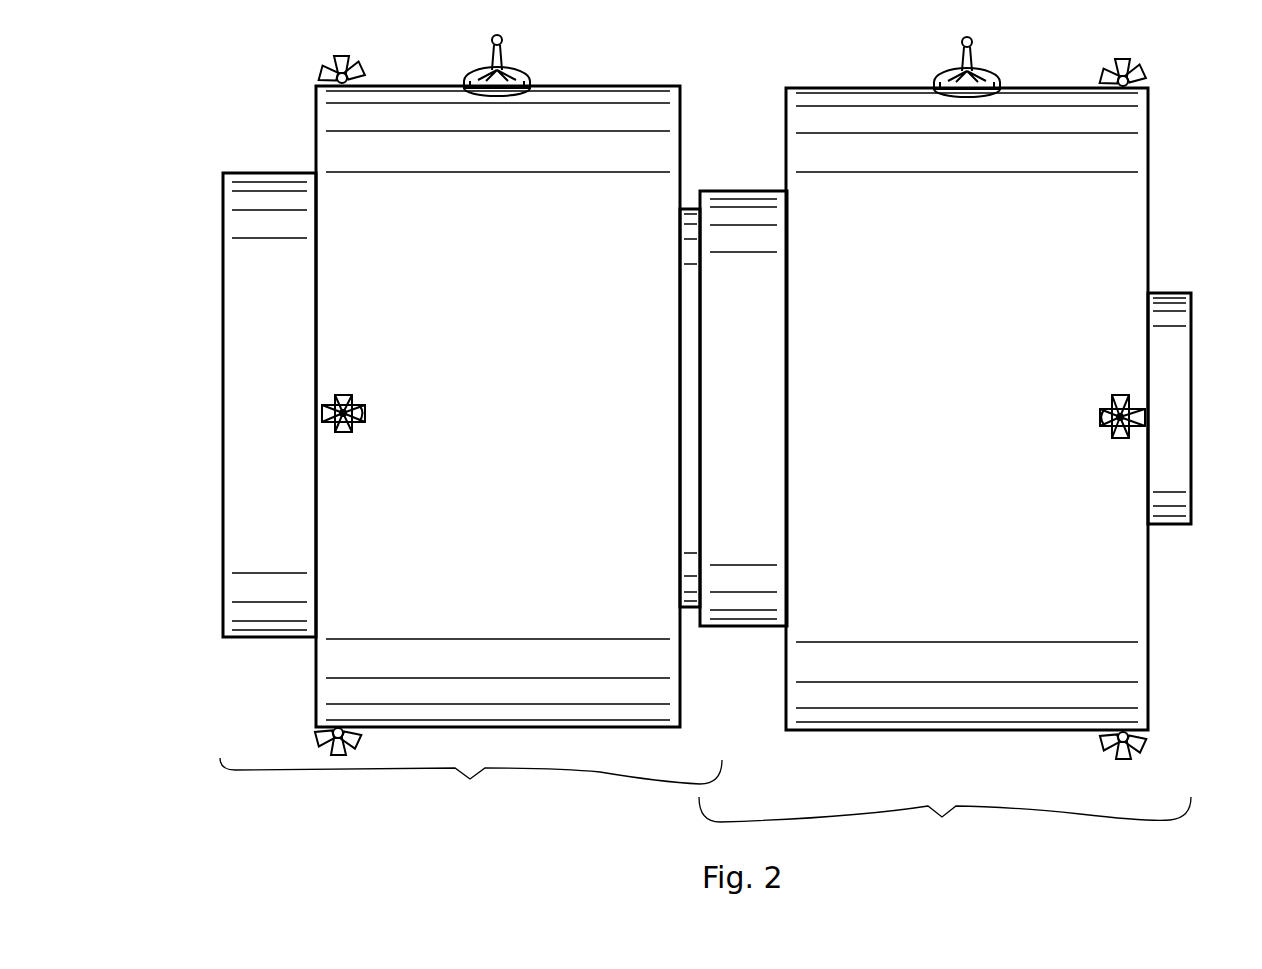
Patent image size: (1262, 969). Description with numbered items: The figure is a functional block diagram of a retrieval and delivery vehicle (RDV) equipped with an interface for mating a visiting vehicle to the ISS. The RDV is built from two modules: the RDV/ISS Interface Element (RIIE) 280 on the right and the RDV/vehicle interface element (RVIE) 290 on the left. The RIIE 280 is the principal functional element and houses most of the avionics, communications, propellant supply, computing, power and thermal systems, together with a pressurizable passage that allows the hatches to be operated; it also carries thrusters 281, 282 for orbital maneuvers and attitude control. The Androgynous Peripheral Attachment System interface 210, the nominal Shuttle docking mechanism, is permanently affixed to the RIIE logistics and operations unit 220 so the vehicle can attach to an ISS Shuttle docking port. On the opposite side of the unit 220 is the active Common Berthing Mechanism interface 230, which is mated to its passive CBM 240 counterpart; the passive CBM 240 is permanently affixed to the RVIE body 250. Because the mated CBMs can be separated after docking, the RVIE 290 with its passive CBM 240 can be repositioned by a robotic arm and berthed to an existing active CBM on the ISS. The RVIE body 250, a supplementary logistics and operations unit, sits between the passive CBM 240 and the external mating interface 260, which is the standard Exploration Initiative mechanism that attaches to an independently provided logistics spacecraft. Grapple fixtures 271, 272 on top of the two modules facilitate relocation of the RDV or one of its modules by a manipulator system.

The Androgynous Peripheral Attachment System interface 210 is at (1180, 288).
The RIIE logistics and operations unit 220 is at (818, 85).
The active Common Berthing Mechanism interface 230 is at (720, 185).
The passive Common Berthing Mechanism 240 is at (687, 203).
The RVIE body 250 is at (647, 83).
The external mating interface 260 is at (253, 170).
The grapple fixture 271 is at (990, 67).
The grapple fixture 272 is at (518, 63).
The thruster 281 is at (1128, 53).
The thruster 282 is at (1146, 413).
The RDV/ISS Interface Element 280 is at (945, 836).
The RDV/vehicle interface element 290 is at (471, 798).